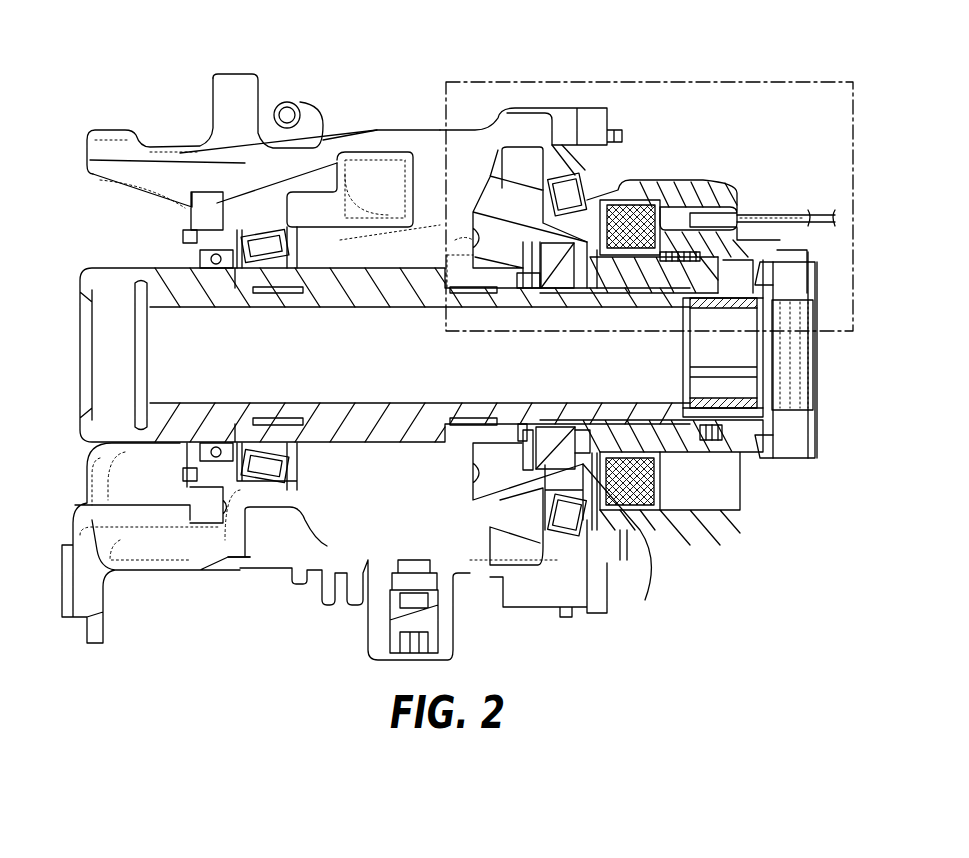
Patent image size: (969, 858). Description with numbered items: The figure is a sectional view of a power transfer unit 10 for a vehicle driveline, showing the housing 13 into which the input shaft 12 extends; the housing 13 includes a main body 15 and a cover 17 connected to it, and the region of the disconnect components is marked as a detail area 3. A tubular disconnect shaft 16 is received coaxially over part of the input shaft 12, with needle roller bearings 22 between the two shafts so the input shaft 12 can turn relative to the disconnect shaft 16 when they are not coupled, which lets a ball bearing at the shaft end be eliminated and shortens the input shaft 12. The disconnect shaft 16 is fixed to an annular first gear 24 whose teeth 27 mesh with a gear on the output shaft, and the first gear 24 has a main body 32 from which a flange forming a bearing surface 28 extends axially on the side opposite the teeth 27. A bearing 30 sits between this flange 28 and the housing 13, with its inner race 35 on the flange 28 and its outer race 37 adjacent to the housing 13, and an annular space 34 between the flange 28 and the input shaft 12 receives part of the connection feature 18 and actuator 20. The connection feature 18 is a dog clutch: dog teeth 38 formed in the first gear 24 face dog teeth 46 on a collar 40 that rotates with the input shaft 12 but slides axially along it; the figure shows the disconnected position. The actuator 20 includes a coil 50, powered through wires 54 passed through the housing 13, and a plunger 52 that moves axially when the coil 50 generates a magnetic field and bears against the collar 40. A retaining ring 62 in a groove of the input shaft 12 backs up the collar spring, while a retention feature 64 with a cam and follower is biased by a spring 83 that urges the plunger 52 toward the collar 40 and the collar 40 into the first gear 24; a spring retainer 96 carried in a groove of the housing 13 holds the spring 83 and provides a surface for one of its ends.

The detail region 3 is at (750, 82).
The power transfer unit 10 is at (128, 72).
The input shaft 12 is at (97, 268).
The housing 13 is at (98, 198).
The main body 15 is at (402, 136).
The disconnect shaft 16 is at (390, 435).
The cover 17 is at (595, 112).
The connection feature 18 is at (524, 305).
The actuator 20 is at (710, 177).
The needle roller bearings 22 is at (286, 294).
The first gear 24 is at (525, 218).
The teeth 27 is at (484, 190).
The bearing surface 28 is at (602, 233).
The bearing 30 is at (580, 215).
The main body 32 is at (518, 160).
The annular space 34 is at (580, 460).
The inner race 35 is at (600, 498).
The outer race 37 is at (576, 500).
The dog teeth 38 is at (530, 442).
The collar 40 is at (557, 278).
The dog teeth 46 is at (546, 448).
The coil 50 is at (652, 508).
The plunger 52 is at (662, 436).
The wires 54 is at (811, 222).
The retaining ring 62 is at (522, 424).
The retention feature 64 is at (698, 245).
The spring 83 is at (710, 442).
The spring retainer 96 is at (720, 258).